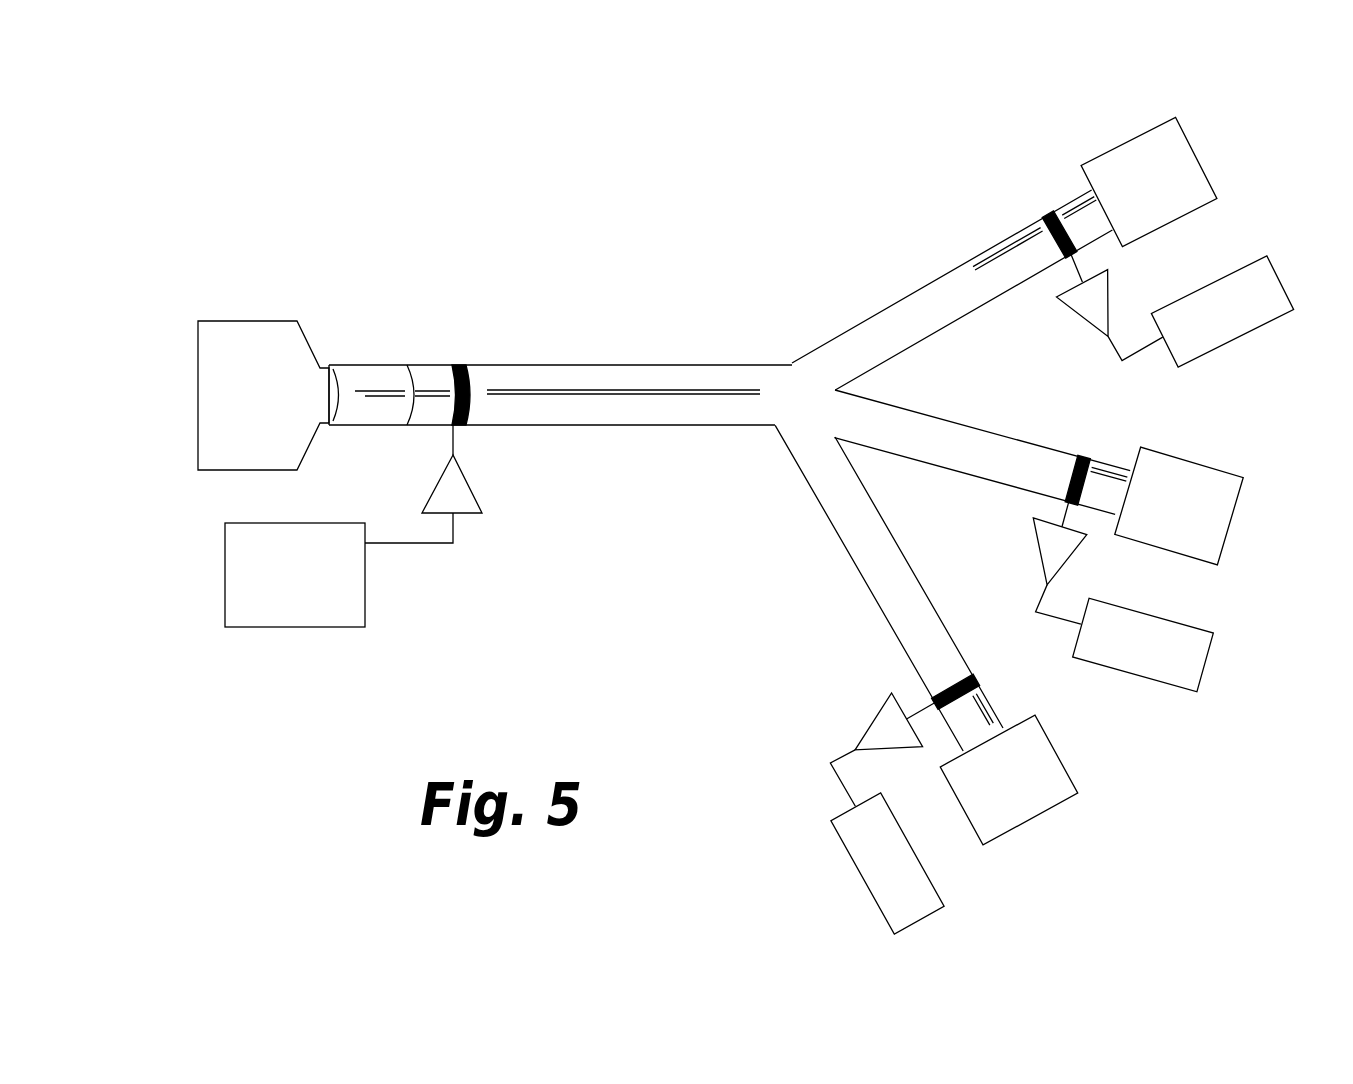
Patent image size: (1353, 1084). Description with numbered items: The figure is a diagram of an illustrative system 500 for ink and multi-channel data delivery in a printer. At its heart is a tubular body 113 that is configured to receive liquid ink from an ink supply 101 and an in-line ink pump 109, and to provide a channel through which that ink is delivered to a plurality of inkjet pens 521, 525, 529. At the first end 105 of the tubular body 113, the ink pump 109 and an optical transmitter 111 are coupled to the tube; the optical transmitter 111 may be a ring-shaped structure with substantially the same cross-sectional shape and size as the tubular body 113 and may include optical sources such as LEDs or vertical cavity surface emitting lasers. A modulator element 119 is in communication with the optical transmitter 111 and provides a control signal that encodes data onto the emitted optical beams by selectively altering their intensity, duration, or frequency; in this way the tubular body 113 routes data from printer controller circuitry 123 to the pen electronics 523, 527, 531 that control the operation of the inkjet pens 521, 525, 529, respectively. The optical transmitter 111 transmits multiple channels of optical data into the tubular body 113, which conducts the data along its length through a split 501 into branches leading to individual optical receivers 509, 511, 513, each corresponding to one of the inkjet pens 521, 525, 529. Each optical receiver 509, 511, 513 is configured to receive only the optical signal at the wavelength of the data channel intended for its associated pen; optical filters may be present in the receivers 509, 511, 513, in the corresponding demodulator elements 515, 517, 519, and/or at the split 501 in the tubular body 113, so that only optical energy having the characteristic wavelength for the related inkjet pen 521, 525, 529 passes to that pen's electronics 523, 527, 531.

The system 500 is at (186, 240).
The ink supply 101 is at (257, 380).
The first end 105 is at (432, 275).
The ink pump 109 is at (428, 380).
The optical transmitter 111 is at (462, 365).
The tubular body 113 is at (652, 382).
The modulator element 119 is at (470, 495).
The printer controller circuitry 123 is at (295, 575).
The split 501 is at (760, 258).
The optical receiver 509 is at (1047, 217).
The optical receiver 511 is at (1080, 453).
The optical receiver 513 is at (972, 677).
The demodulator element 515 is at (1092, 310).
The demodulator element 517 is at (1048, 550).
The demodulator element 519 is at (880, 728).
The inkjet pen 521 is at (1193, 172).
The pen electronics 523 is at (1252, 283).
The inkjet pen 525 is at (1205, 482).
The pen electronics 527 is at (1188, 642).
The inkjet pen 529 is at (1055, 785).
The pen electronics 531 is at (927, 903).